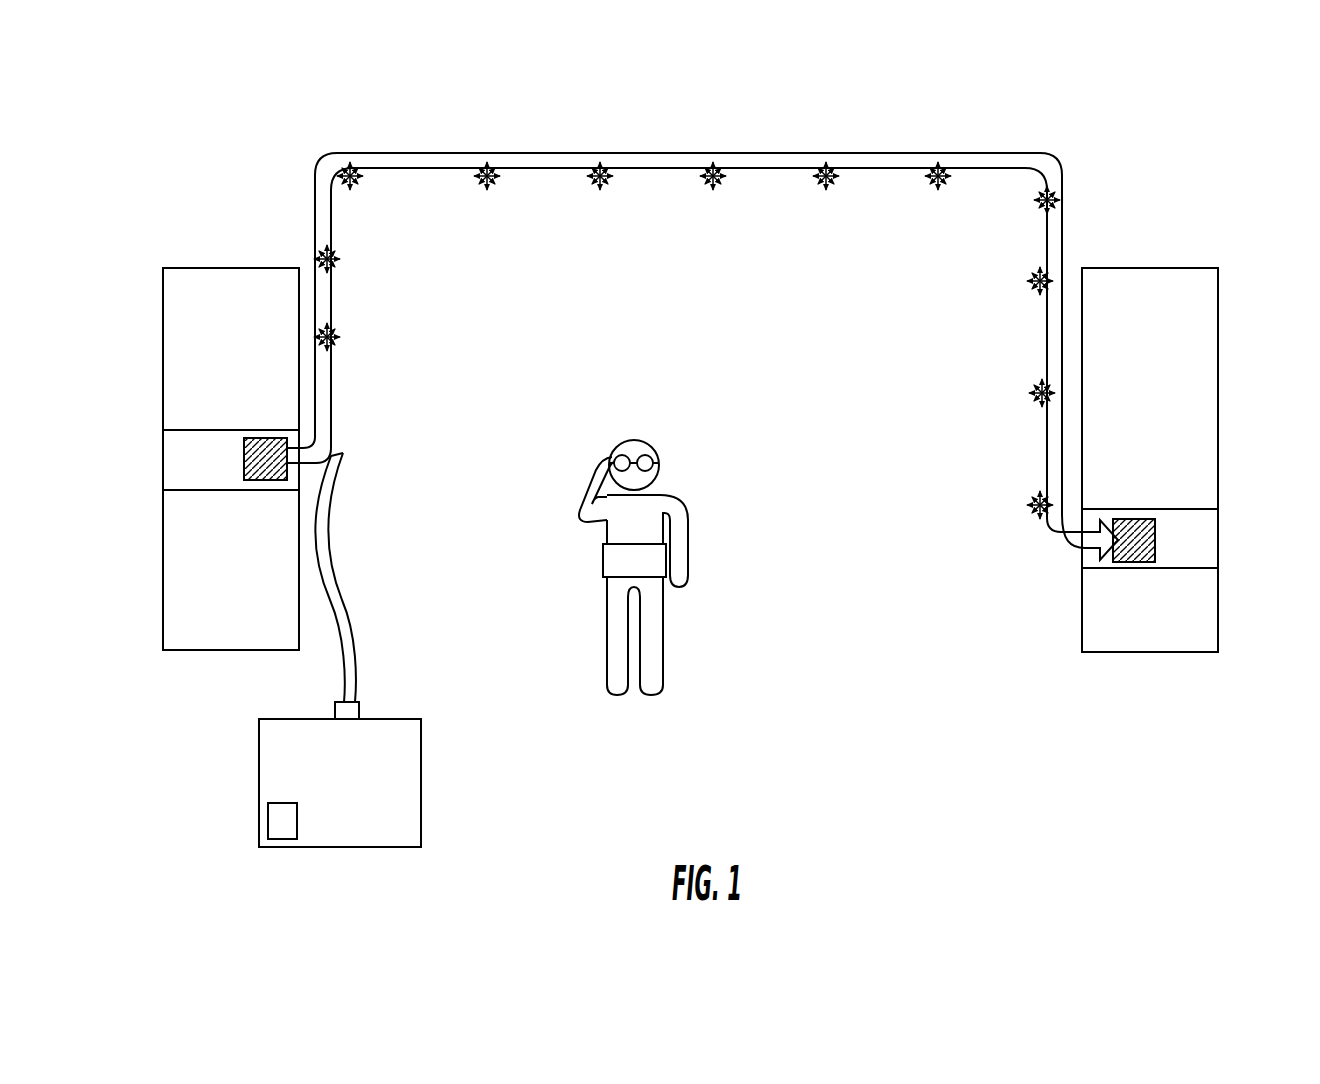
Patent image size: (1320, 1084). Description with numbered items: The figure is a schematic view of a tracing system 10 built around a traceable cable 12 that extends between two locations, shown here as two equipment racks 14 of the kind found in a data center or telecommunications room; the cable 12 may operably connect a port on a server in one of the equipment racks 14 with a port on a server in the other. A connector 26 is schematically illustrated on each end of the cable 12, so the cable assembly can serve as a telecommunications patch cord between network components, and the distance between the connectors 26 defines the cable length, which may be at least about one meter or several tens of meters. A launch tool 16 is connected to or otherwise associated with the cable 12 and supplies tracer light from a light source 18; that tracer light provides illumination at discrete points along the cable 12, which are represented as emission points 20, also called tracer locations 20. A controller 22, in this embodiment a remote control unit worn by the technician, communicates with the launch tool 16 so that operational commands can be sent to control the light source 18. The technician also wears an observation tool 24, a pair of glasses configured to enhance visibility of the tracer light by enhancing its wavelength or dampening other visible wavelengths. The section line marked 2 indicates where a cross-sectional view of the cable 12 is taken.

The tracing system 10 is at (897, 726).
The traceable cable 12 is at (648, 153).
The equipment rack 14 is at (163, 288).
The launch tool 16 is at (480, 825).
The light source 18 is at (283, 818).
The emission point 20 is at (937, 173).
The controller 22 is at (652, 556).
The observation tool 24 is at (645, 462).
The connector 26 is at (253, 438).
The section line 2- 2 is at (520, 226).